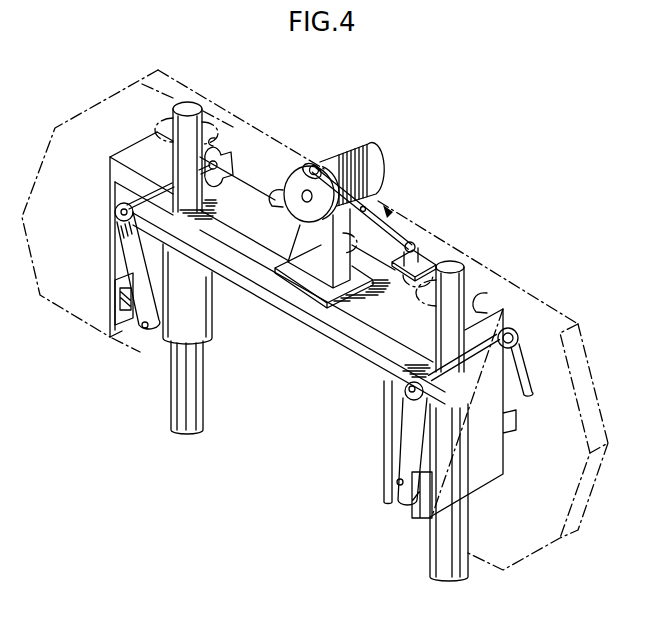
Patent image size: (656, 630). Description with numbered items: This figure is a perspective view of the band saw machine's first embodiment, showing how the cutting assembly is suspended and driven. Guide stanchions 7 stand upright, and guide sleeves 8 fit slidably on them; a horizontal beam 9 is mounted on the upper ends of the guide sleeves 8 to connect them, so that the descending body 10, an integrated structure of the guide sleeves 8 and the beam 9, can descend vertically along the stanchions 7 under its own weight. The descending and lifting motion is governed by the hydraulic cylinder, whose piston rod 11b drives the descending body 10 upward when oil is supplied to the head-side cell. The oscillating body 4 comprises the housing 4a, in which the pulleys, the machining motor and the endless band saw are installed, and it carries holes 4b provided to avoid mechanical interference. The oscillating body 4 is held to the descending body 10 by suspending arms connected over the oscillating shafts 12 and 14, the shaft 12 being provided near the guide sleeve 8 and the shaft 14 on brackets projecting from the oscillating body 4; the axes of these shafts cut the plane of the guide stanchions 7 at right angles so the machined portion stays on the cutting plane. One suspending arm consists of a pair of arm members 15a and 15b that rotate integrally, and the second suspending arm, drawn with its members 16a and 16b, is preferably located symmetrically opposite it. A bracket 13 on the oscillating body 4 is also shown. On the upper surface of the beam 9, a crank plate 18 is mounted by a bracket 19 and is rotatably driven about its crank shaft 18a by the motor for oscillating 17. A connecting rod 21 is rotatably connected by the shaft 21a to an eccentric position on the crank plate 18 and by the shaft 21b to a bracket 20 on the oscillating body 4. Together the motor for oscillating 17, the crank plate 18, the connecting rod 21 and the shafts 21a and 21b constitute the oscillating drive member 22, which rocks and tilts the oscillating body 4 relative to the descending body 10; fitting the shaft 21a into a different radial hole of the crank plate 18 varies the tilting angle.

The oscillating body 4 is at (601, 351).
The housing 4a is at (576, 318).
The holes 4b is at (215, 139).
The guide stanchions 7 is at (183, 397).
The guide sleeves 8 is at (197, 362).
The horizontal beam 9 is at (244, 278).
The descending body 10 is at (304, 343).
The piston rod 11b is at (386, 489).
The oscillating shaft 12 is at (128, 206).
The bracket 13 is at (128, 320).
The oscillating shaft 14 is at (146, 332).
The arm member 15a is at (126, 244).
The arm member 15b is at (233, 168).
The lever arm 16a is at (405, 420).
The lever arm 16b is at (516, 372).
The motor for oscillating 17 is at (367, 150).
The crank plate 18 is at (316, 164).
The crank shaft 18a is at (304, 201).
The bracket 19 is at (411, 240).
The bracket 20 is at (425, 259).
The connecting rod 21 is at (390, 208).
The shaft 21a is at (320, 162).
The shaft 21b is at (416, 244).
The oscillating drive member 22 is at (400, 212).